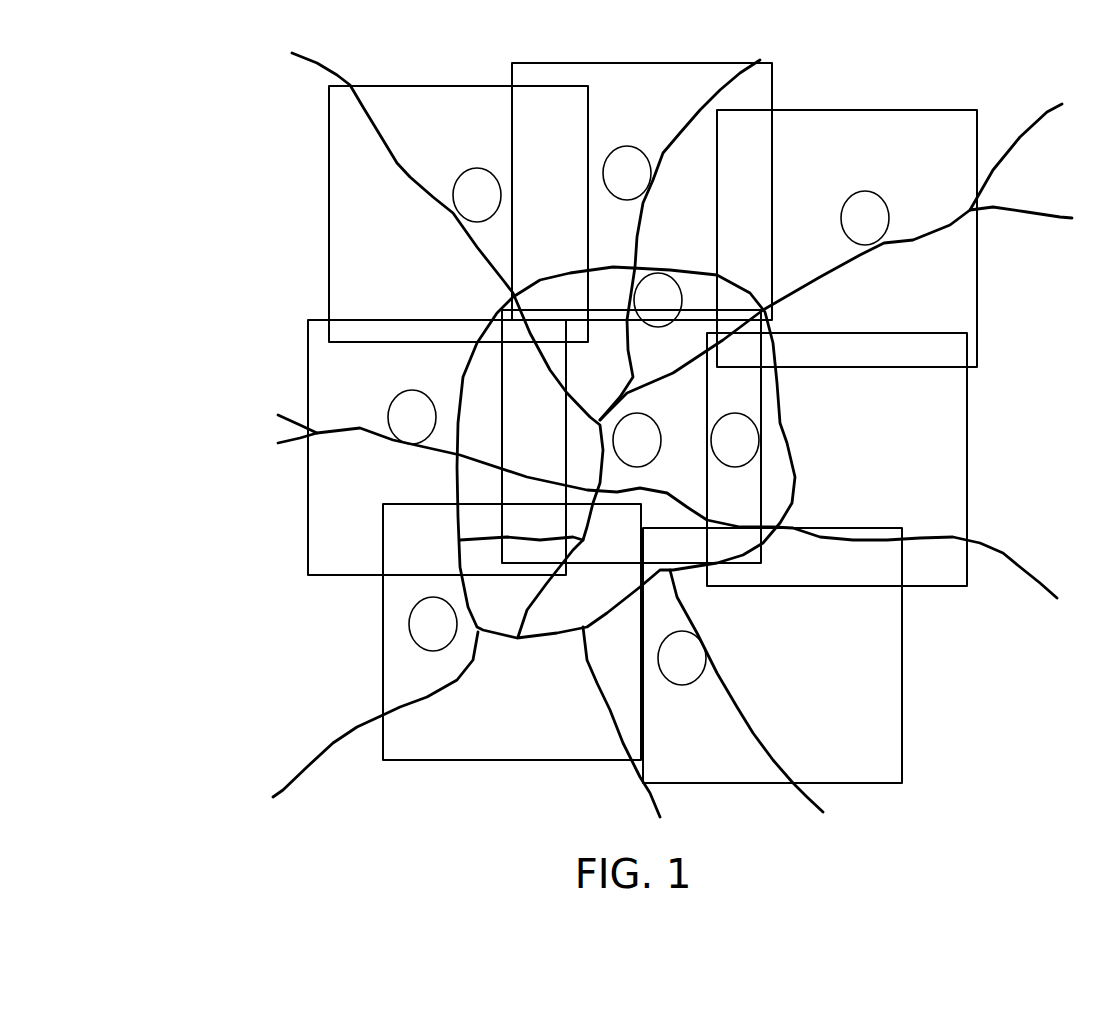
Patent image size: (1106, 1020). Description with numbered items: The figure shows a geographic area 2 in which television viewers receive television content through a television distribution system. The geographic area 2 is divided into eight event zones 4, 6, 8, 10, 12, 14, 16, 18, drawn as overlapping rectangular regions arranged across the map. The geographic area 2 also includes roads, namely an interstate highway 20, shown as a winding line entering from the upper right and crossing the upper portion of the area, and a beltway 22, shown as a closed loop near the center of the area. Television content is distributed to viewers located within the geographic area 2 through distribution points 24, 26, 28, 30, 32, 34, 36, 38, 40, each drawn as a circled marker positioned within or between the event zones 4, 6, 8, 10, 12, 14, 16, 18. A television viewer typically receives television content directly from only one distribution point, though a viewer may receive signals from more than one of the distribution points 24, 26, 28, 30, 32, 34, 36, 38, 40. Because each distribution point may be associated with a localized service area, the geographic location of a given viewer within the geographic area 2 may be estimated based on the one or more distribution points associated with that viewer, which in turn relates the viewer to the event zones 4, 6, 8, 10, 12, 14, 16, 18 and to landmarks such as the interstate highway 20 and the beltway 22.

The geographic area 2 is at (236, 76).
The event zone 4 is at (328, 197).
The event zone 6 is at (663, 63).
The event zone 8 is at (933, 109).
The event zone 10 is at (308, 523).
The event zone 12 is at (500, 417).
The event zone 14 is at (966, 390).
The event zone 16 is at (383, 673).
The event zone 18 is at (903, 643).
The interstate highway 20 is at (912, 239).
The beltway 22 is at (787, 443).
The distribution point 24 is at (477, 195).
The distribution point 26 is at (627, 173).
The distribution point 28 is at (865, 218).
The distribution point 30 is at (658, 300).
The distribution point 32 is at (412, 417).
The distribution point 34 is at (637, 440).
The distribution point 36 is at (735, 440).
The distribution point 38 is at (433, 624).
The distribution point 40 is at (682, 658).